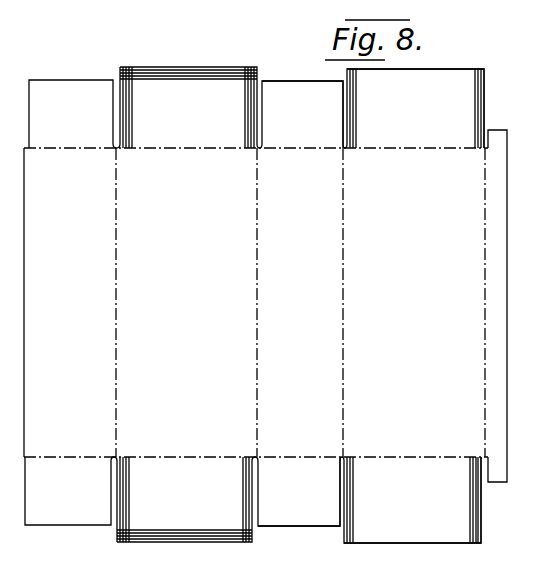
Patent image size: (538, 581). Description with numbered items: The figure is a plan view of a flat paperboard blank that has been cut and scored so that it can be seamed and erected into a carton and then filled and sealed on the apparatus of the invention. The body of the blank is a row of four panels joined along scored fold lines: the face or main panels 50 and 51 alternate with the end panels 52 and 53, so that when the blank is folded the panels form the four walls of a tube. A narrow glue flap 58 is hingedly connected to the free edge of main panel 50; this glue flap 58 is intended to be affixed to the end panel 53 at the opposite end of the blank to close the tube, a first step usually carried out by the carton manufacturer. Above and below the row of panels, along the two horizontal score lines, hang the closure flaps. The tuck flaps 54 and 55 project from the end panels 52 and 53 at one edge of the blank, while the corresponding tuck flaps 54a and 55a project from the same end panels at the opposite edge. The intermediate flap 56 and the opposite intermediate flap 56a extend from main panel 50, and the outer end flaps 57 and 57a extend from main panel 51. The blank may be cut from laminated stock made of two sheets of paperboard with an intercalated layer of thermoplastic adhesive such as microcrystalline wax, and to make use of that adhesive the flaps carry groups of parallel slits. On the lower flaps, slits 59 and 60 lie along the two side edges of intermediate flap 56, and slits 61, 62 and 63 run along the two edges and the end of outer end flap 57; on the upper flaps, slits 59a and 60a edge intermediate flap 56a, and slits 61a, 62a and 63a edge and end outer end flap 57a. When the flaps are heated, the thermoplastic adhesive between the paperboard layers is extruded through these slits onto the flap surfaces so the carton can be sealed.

The main panel 50 is at (425, 298).
The main panel 51 is at (195, 298).
The end panel 52 is at (310, 298).
The end panel 53 is at (80, 298).
The tuck flap 54 is at (310, 503).
The tuck flap 55 is at (78, 503).
The intermediate flap 56 is at (428, 508).
The outer end flap 57 is at (195, 503).
The glue flap 58 is at (502, 273).
The group of parallel slits 59 is at (481, 518).
The group of parallel slits 60 is at (352, 530).
The group of parallel slits 61 is at (250, 532).
The group of parallel slits 62 is at (168, 538).
The group of parallel slits 63 is at (121, 528).
The tuck flap 54a is at (315, 121).
The tuck flap 55a is at (90, 118).
The intermediate flap 56a is at (430, 130).
The outer end flap 57a is at (210, 118).
The group of parallel slits 59a is at (481, 98).
The group of parallel slits 60a is at (353, 96).
The group of parallel slits 61a is at (258, 75).
The group of parallel slits 62a is at (183, 67).
The group of parallel slits 63a is at (118, 73).